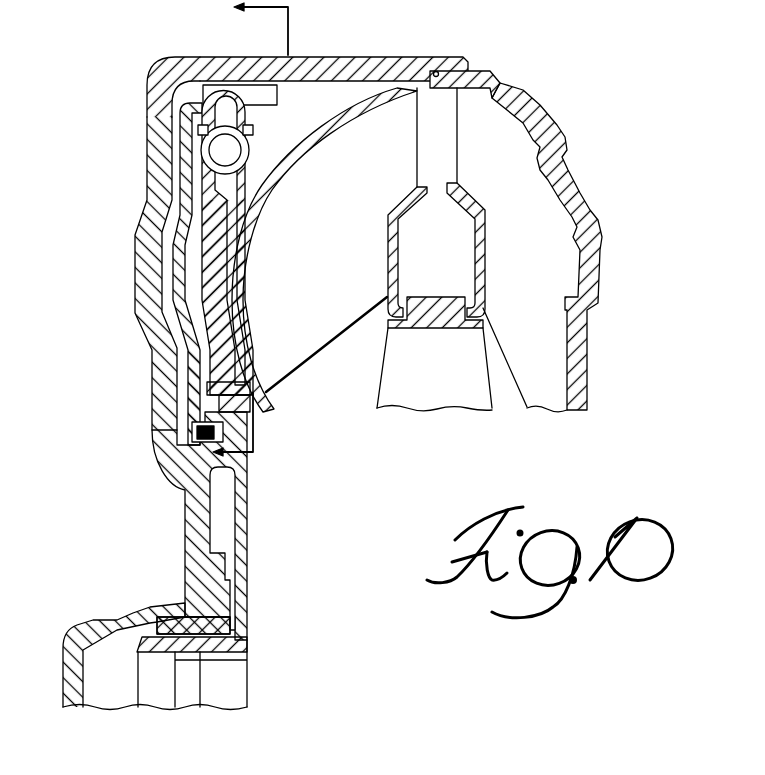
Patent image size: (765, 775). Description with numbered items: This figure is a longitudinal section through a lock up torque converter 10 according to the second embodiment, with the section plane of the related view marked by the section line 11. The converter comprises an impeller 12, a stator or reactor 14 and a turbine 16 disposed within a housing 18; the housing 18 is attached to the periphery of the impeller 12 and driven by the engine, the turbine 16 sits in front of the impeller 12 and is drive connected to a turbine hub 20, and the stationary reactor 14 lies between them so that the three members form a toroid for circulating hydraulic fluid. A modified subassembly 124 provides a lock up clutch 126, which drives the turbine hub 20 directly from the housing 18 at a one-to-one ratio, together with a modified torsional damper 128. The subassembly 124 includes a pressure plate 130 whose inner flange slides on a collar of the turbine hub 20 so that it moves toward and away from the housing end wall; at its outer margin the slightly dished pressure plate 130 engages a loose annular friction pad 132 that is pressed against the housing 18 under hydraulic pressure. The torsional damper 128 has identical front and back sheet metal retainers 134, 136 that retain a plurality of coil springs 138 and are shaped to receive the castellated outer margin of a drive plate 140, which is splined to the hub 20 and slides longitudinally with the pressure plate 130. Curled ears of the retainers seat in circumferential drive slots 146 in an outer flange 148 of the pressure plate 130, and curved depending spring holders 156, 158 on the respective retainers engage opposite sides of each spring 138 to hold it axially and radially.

The lock up torque converter 10 is at (366, 356).
The section line 11- 11 is at (275, 249).
The impeller 12 is at (547, 262).
The stator or reactor 14 is at (455, 395).
The turbine 16 is at (328, 332).
The housing 18 is at (410, 62).
The turbine hub 20 is at (242, 553).
The subassembly 124 is at (155, 295).
The lock up clutch 126 is at (165, 187).
The torsional damper 128 is at (236, 240).
The pressure plate 130 is at (200, 377).
The annular friction pad 132 is at (182, 157).
The front sheet metal retainer 134 is at (215, 110).
The back sheet metal retainer 136 is at (245, 113).
The torque transmitting coil spring 138 is at (244, 168).
The drive plate 140 is at (210, 287).
The drive slot 146 is at (252, 92).
The outer flange 148 is at (290, 60).
The spring holder 156 is at (200, 130).
The spring holder 158 is at (252, 128).